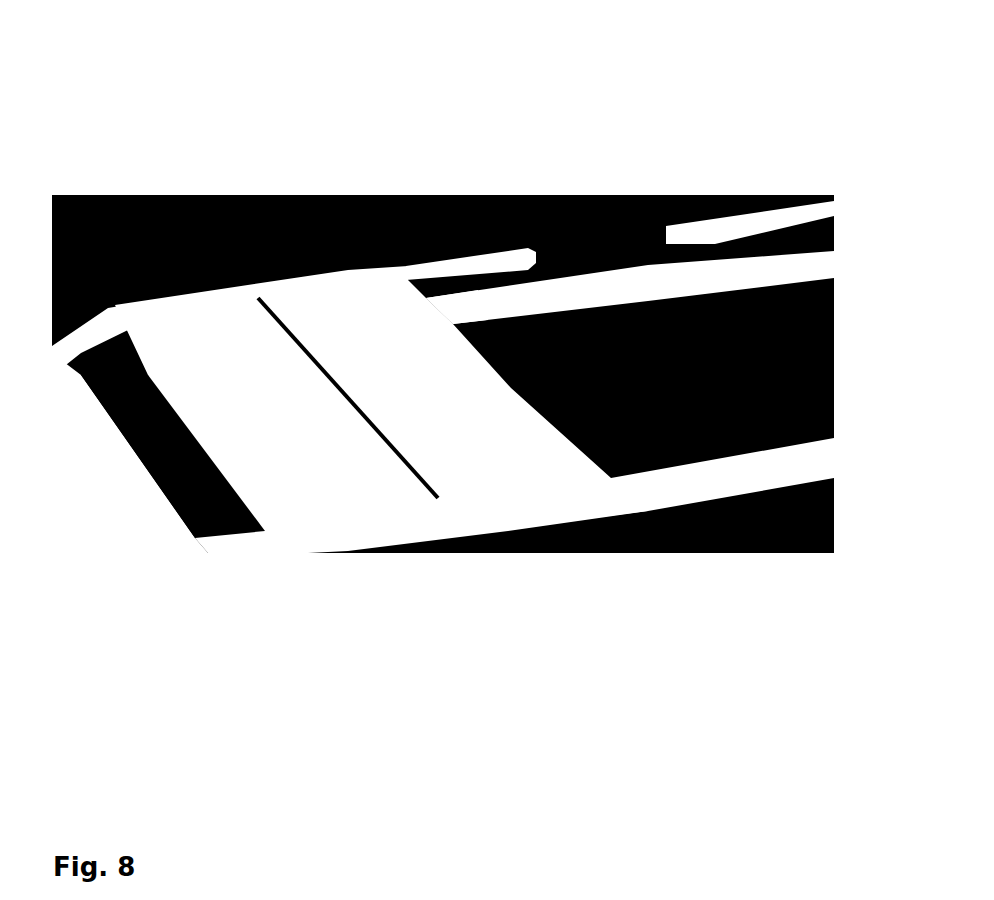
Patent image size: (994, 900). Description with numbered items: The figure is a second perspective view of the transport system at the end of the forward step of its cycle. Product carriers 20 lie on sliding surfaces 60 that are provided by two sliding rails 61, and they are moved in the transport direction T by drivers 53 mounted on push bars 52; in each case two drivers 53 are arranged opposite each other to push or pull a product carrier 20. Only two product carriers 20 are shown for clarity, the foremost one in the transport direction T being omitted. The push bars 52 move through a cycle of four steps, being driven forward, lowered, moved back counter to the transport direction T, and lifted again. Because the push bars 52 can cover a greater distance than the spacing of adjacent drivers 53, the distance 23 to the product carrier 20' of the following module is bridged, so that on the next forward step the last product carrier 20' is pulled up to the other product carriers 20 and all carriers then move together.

The product carrier 20 is at (381, 309).
The product carrier of the following module 20' is at (130, 497).
The distance 23 is at (116, 308).
The push bar 52 is at (735, 213).
The driver 53 is at (500, 187).
The sliding surface 60 is at (447, 286).
The sliding rail 61 is at (580, 292).
The transport direction T is at (205, 597).